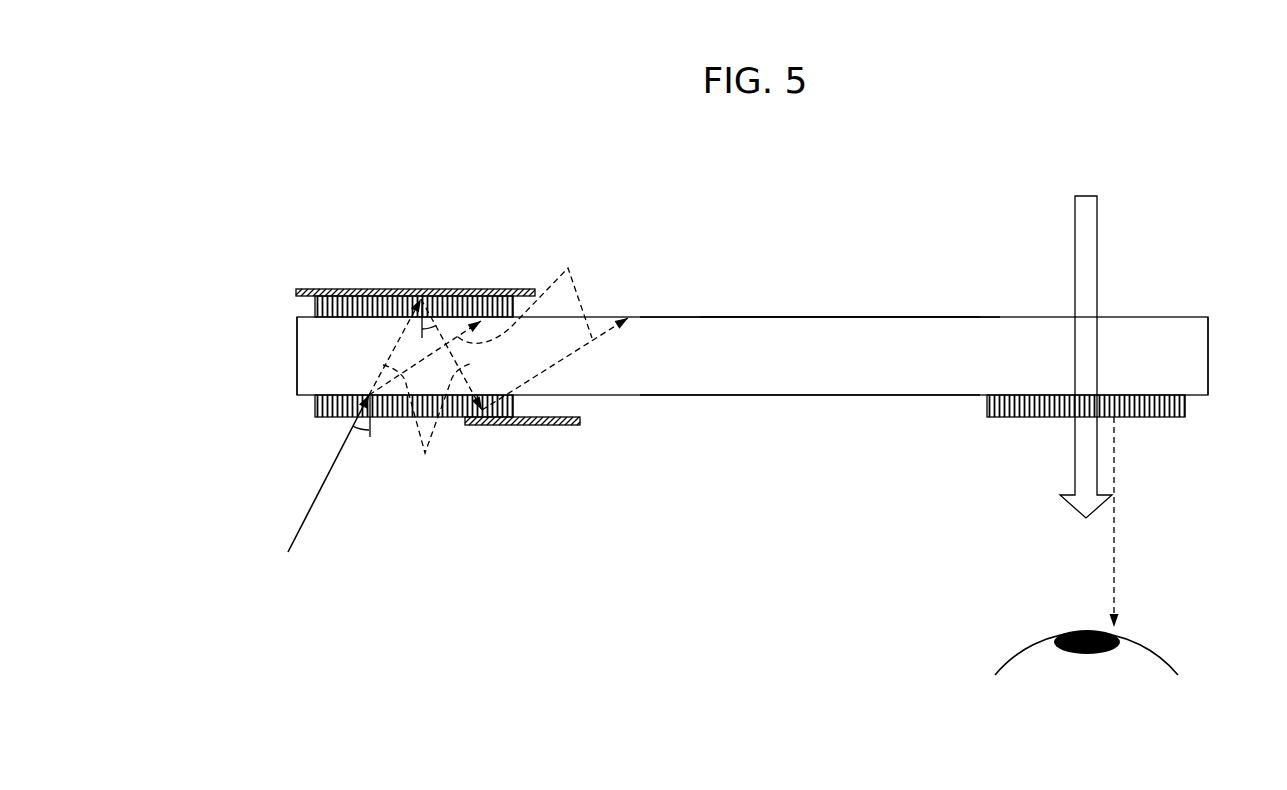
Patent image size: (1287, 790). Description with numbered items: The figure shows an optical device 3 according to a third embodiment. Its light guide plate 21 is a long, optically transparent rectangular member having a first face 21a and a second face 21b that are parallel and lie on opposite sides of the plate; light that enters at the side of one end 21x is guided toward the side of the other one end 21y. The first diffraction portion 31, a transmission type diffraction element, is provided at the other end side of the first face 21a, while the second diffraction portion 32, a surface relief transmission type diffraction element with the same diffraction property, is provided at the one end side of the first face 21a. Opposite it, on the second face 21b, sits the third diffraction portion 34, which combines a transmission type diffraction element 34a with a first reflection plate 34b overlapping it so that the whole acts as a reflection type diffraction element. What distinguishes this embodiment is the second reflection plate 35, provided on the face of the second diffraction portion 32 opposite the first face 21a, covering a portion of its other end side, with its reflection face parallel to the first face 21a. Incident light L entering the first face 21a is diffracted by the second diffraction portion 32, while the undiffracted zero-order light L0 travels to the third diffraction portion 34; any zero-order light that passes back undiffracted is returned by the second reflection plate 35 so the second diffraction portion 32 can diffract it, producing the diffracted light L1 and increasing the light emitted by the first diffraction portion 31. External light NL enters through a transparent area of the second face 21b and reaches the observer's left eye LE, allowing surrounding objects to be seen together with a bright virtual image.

The optical device 3 is at (828, 287).
The light guide plate 21 is at (297, 365).
The first face 21a is at (693, 395).
The second face 21b is at (695, 317).
The one end 21x is at (297, 333).
The other one end 21y is at (1209, 355).
The first diffraction portion 31 is at (1185, 408).
The second diffraction portion 32 is at (315, 405).
The third diffraction portion 34 is at (415, 256).
The diffraction element 34a is at (417, 237).
The first reflection plate 34b is at (398, 290).
The second reflection plate 35 is at (540, 426).
The incident light L is at (319, 492).
The zero-order light L0 is at (427, 425).
The diffracted light L1 is at (525, 291).
The external light NL is at (1097, 224).
The left eye LE is at (1013, 656).